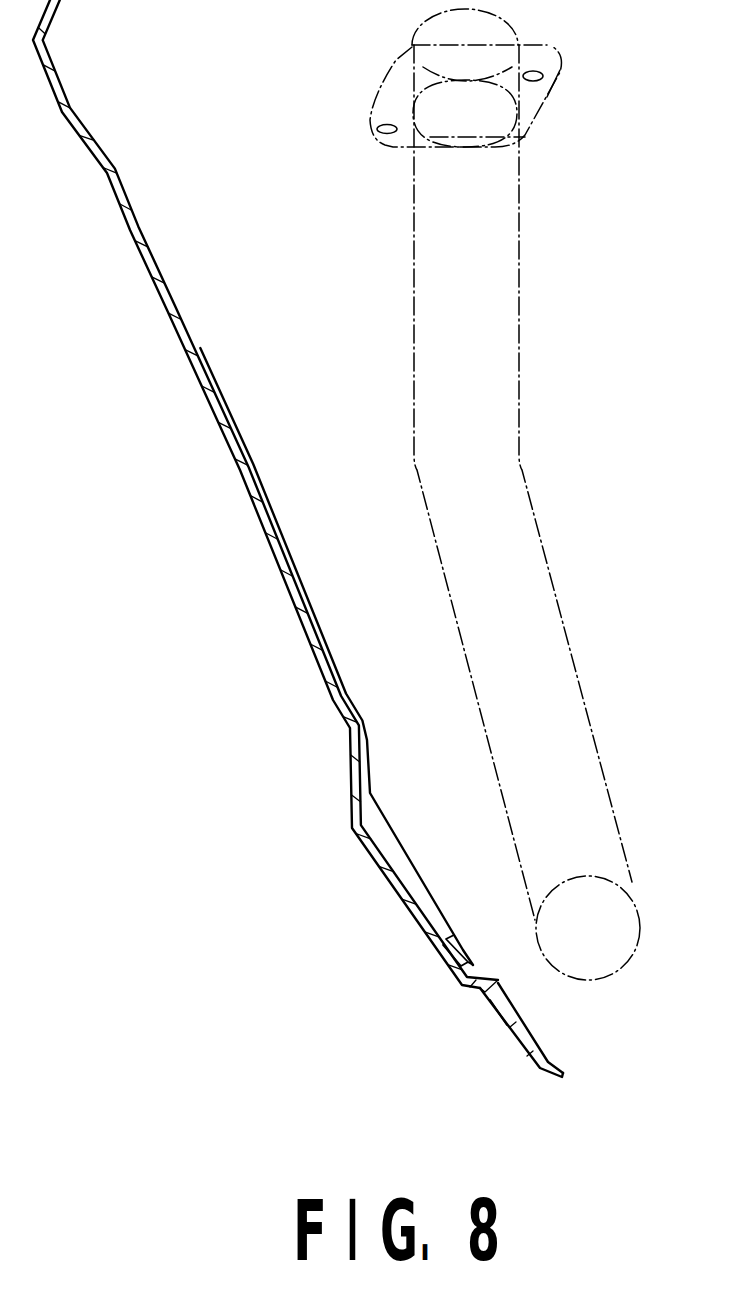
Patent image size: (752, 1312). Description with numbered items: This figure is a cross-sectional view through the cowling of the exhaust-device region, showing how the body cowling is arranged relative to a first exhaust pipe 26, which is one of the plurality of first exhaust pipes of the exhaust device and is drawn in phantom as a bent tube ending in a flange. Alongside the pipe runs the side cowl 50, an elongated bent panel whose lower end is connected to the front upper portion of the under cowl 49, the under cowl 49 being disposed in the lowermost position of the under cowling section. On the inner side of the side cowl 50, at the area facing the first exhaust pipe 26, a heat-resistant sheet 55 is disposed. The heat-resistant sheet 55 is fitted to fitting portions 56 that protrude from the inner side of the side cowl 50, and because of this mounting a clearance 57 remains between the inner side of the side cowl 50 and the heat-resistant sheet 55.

The first exhaust pipe 26 is at (520, 535).
The under cowl 49 is at (488, 1015).
The side cowl 50 is at (350, 832).
The heat-resistant sheet 55 is at (220, 382).
The fitting portion 56 is at (473, 975).
The clearance 57 is at (409, 863).